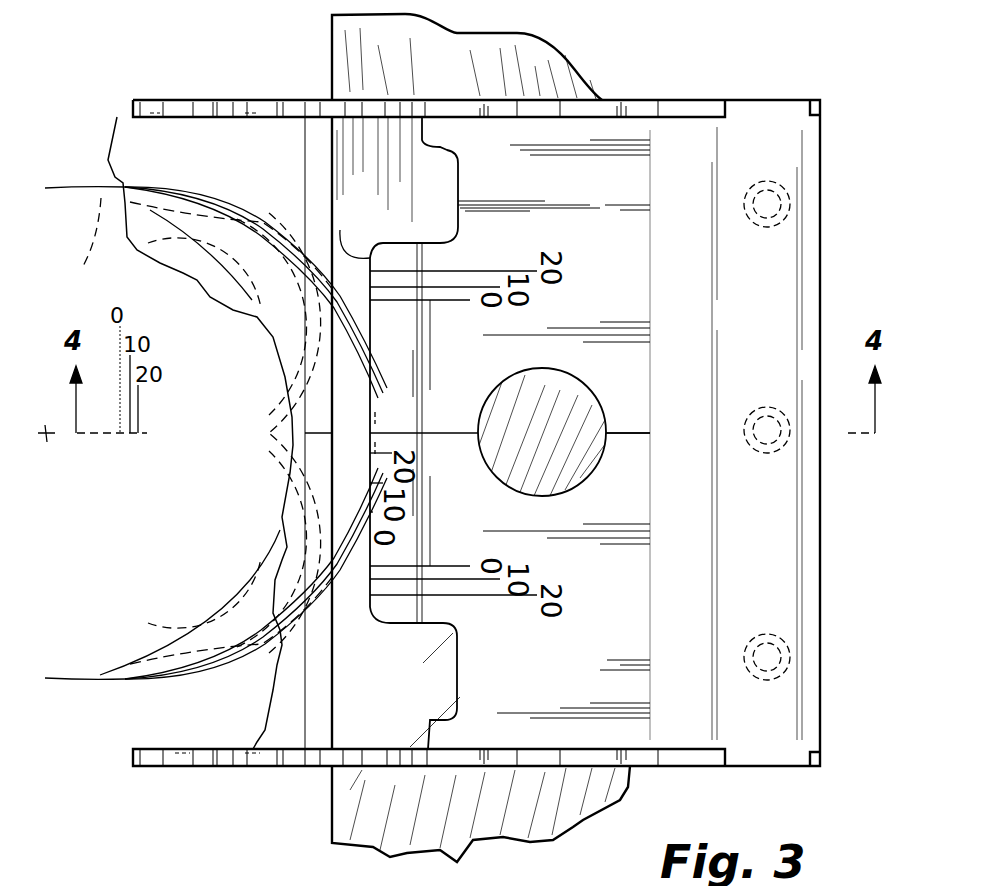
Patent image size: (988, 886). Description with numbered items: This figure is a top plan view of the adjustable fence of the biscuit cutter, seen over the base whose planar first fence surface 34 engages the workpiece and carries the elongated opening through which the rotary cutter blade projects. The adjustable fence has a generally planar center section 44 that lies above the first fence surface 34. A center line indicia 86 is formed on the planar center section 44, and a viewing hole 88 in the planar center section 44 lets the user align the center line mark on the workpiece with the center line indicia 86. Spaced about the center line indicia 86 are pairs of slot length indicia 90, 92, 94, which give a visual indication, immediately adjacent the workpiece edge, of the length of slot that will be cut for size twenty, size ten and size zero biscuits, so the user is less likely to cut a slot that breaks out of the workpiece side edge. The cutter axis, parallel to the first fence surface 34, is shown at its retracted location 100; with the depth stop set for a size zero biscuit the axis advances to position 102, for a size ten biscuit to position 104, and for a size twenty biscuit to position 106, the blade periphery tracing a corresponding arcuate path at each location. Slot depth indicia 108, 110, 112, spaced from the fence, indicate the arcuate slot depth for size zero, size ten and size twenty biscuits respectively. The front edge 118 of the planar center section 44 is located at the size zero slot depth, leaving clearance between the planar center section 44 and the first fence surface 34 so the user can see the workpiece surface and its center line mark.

The first fence surface 34 is at (333, 672).
The planar center section 44 is at (548, 708).
The center line indicia 86 is at (630, 432).
The viewing hole 88 is at (588, 378).
The slot length indicia 90 is at (482, 642).
The slot length indicia 92 is at (462, 634).
The slot length indicia 94 is at (442, 628).
The cutter axis retracted position 100 is at (43, 437).
The cutter axis size 0 position 102 is at (120, 437).
The cutter axis size 10 position 104 is at (130, 437).
The cutter axis size 20 position 106 is at (138, 437).
The slot depth indicia 108 is at (395, 513).
The slot depth indicia 110 is at (407, 487).
The slot depth indicia 112 is at (417, 453).
The front edge 118 is at (340, 230).